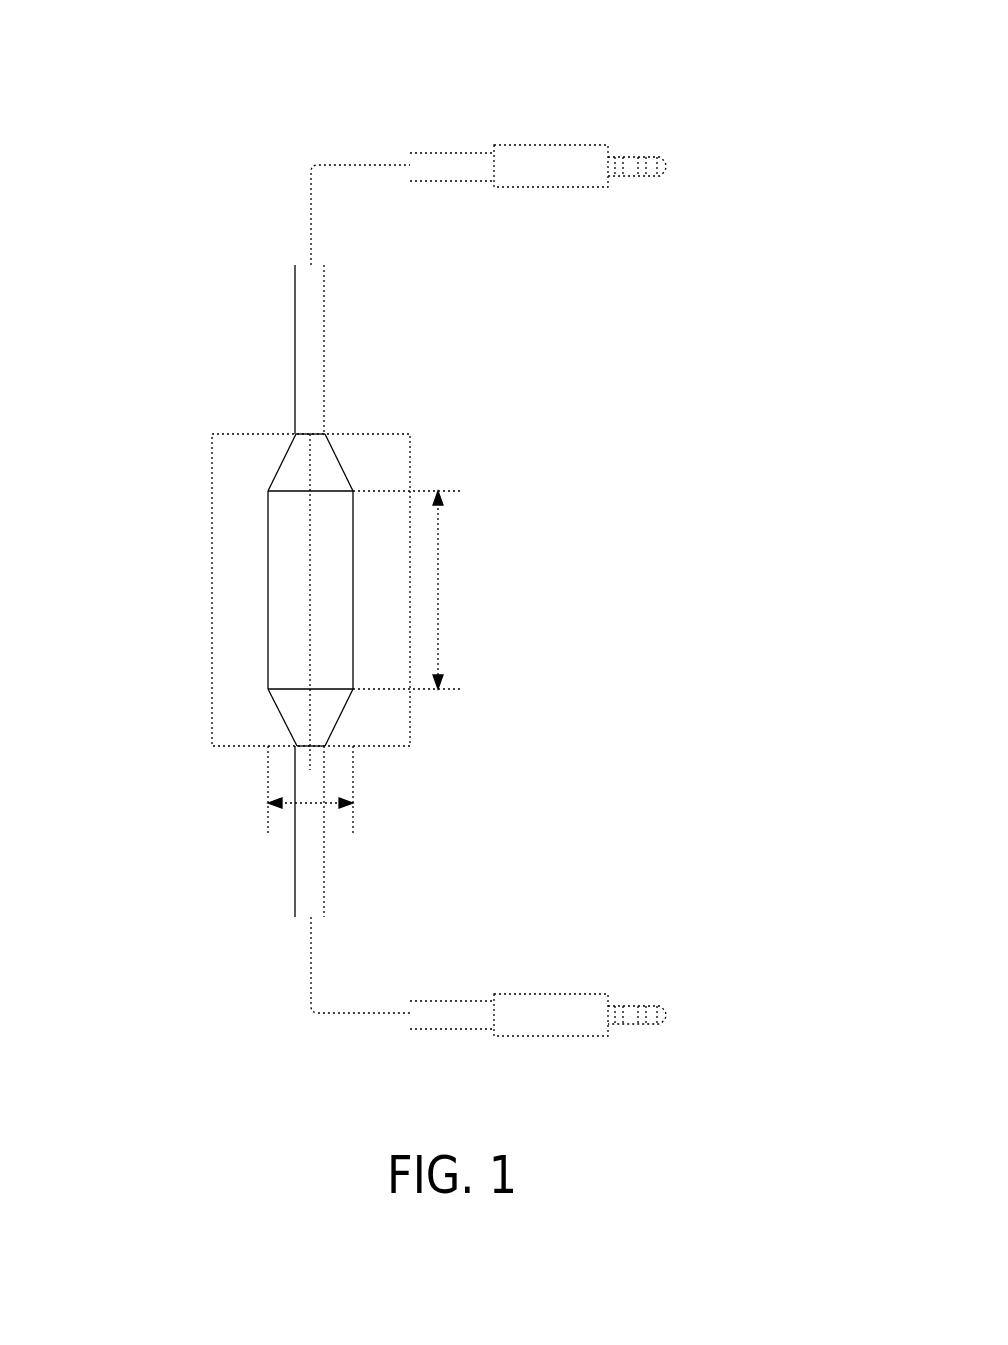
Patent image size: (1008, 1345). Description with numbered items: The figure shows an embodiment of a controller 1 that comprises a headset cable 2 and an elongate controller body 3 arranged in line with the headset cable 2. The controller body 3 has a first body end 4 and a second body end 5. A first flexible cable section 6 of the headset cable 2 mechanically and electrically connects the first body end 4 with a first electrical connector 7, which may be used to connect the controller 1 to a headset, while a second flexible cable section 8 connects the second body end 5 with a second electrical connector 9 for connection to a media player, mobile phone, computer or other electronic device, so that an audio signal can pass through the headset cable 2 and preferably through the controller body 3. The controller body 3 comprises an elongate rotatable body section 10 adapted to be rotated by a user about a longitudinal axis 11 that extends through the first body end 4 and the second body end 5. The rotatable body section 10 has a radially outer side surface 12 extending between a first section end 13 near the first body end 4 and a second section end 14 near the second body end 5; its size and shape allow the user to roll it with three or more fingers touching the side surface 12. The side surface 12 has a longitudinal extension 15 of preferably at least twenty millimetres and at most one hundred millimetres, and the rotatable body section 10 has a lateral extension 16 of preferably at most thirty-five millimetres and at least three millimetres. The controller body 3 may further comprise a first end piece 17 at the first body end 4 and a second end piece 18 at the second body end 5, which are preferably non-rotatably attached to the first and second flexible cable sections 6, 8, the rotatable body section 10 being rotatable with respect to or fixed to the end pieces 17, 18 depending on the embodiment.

The controller 1 is at (652, 347).
The headset cable 2 is at (240, 297).
The controller body 3 is at (232, 562).
The first body end 4 is at (288, 430).
The second body end 5 is at (288, 752).
The first flexible cable section 6 is at (312, 335).
The first electrical connector 7 is at (573, 163).
The second flexible cable section 8 is at (314, 864).
The second electrical connector 9 is at (578, 1005).
The rotatable body section 10 is at (258, 637).
The longitudinal axis 11 is at (318, 583).
The side surface 12 is at (335, 643).
The first section end 13 is at (260, 491).
The second section end 14 is at (258, 693).
The longitudinal extension 15 is at (452, 592).
The lateral extension 16 is at (300, 808).
The first end piece 17 is at (327, 465).
The second end piece 18 is at (327, 725).